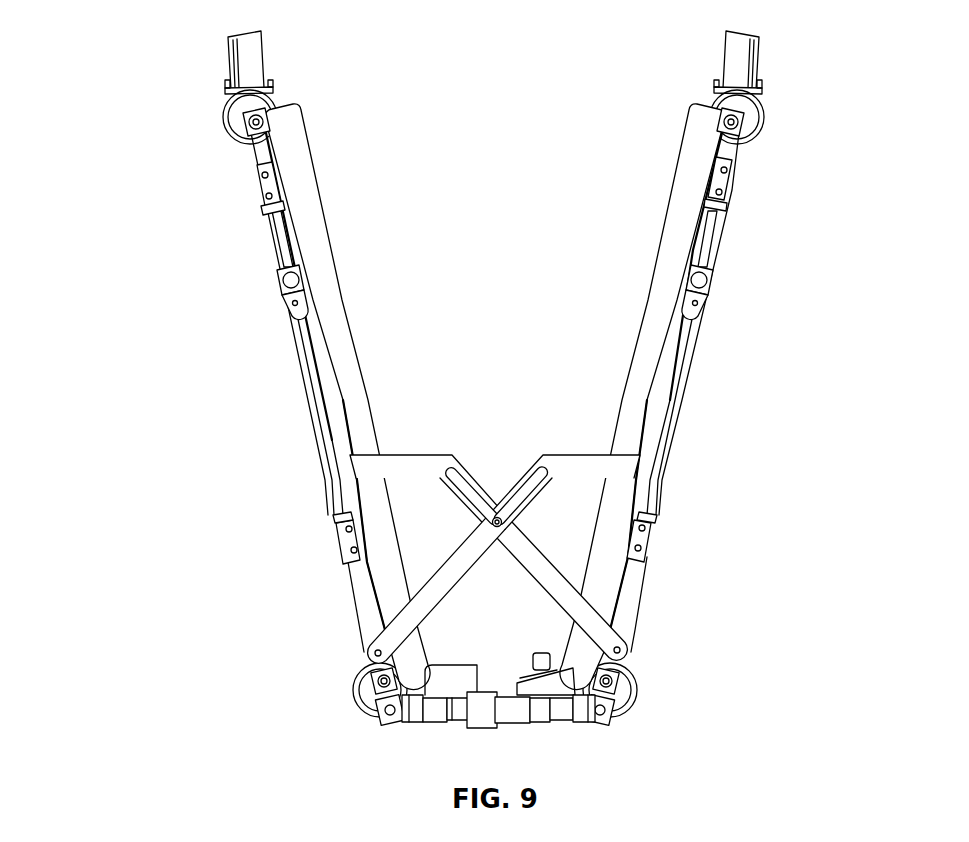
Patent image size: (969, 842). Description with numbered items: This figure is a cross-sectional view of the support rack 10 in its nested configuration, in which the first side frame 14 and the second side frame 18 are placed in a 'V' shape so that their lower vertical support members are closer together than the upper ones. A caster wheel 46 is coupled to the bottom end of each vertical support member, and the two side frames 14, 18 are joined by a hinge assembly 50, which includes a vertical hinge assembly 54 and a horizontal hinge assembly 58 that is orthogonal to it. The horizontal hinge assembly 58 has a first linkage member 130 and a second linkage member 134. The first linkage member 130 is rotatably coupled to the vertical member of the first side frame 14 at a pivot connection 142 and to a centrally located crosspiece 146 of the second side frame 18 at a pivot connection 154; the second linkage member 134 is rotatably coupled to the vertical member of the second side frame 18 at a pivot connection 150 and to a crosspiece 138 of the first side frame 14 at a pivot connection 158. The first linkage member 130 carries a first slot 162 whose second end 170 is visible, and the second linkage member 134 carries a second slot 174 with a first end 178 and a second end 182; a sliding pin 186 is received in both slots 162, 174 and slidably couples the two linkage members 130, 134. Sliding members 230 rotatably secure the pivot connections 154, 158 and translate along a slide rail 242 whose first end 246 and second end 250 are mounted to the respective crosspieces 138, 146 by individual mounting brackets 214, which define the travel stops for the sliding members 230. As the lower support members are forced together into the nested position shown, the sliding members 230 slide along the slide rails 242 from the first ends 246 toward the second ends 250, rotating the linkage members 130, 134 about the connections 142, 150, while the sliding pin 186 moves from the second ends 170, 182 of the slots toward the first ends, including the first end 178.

The support rack 10 is at (63, 256).
The first side frame 14 is at (802, 450).
The second side frame 18 is at (194, 457).
The caster wheel 46 is at (253, 57).
The hinge assembly 50 is at (183, 743).
The vertical hinge assembly 54 is at (482, 751).
The horizontal hinge assembly 58 is at (458, 364).
The first linkage member 130 is at (563, 605).
The second linkage member 134 is at (430, 588).
The crosspiece 138 is at (680, 225).
The pivot connection 142 is at (620, 650).
The crosspiece 146 is at (313, 228).
The pivot connection 150 is at (372, 661).
The pivot connection 154 is at (298, 307).
The pivot connection 158 is at (697, 302).
The first slot 162 is at (478, 490).
The second end 170 is at (453, 453).
The second slot 174 is at (527, 506).
The first end 178 is at (489, 527).
The second end 182 is at (540, 452).
The sliding pin 186 is at (500, 534).
The mounting bracket 214 is at (268, 187).
The sliding member 230 is at (283, 293).
The slide rail 242 is at (283, 244).
The first end 246 is at (340, 517).
The second end 250 is at (265, 207).